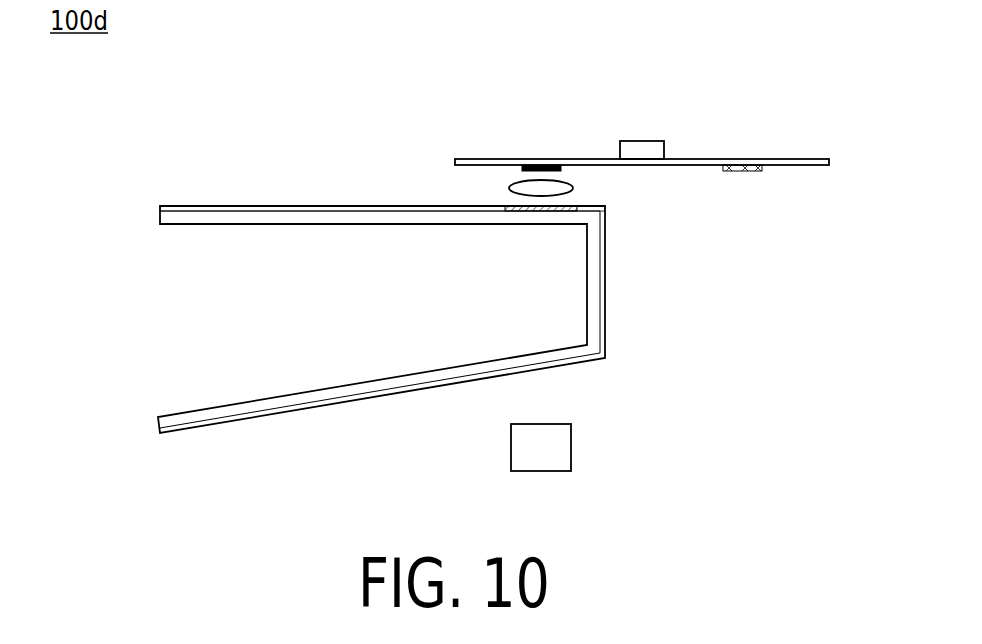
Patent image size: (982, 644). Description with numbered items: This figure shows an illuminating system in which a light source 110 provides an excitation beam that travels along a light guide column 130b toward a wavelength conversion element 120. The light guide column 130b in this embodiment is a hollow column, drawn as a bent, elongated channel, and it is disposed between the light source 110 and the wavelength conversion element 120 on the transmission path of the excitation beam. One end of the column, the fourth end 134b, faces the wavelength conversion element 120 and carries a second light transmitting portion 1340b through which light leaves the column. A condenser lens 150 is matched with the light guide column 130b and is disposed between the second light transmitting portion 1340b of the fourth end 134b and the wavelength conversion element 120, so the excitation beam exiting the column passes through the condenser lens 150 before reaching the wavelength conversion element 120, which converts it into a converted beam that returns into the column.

The light source 110 is at (540, 445).
The wavelength conversion element 120 is at (805, 130).
The light guide column 130b is at (147, 218).
The fourth end 134b is at (401, 221).
The second light transmitting portion 1340b is at (552, 211).
The condenser lens 150 is at (560, 189).